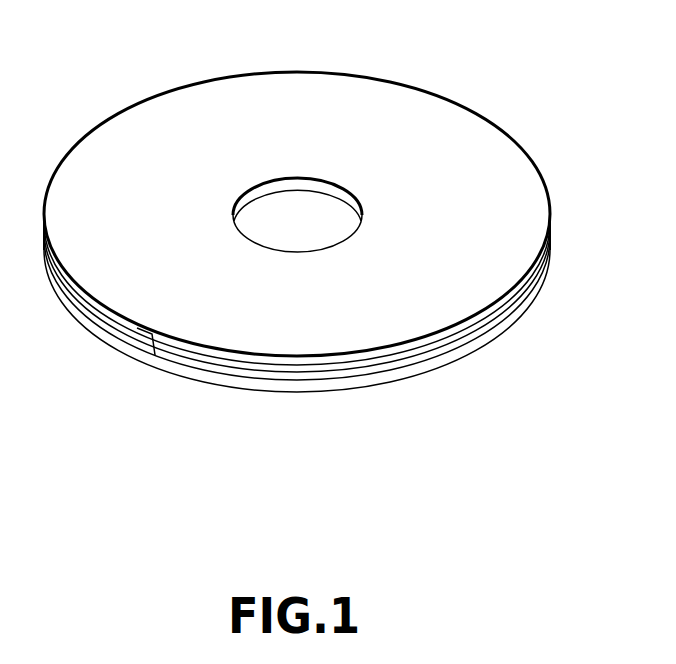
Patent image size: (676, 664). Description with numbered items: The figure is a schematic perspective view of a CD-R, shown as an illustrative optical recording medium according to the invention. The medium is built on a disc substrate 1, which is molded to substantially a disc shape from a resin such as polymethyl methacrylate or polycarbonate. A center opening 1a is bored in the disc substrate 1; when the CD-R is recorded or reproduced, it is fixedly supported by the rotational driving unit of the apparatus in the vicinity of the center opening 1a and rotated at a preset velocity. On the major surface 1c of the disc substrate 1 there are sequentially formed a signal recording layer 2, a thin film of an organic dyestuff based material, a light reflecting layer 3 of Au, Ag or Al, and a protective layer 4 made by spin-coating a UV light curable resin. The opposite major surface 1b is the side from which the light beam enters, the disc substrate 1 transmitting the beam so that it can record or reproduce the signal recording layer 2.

The disc substrate 1 is at (312, 392).
The center opening 1a is at (290, 190).
The major surface 1b is at (240, 391).
The major surface 1c is at (137, 328).
The signal recording layer 2 is at (365, 376).
The light reflecting layer 3 is at (414, 360).
The protective layer 4 is at (455, 337).